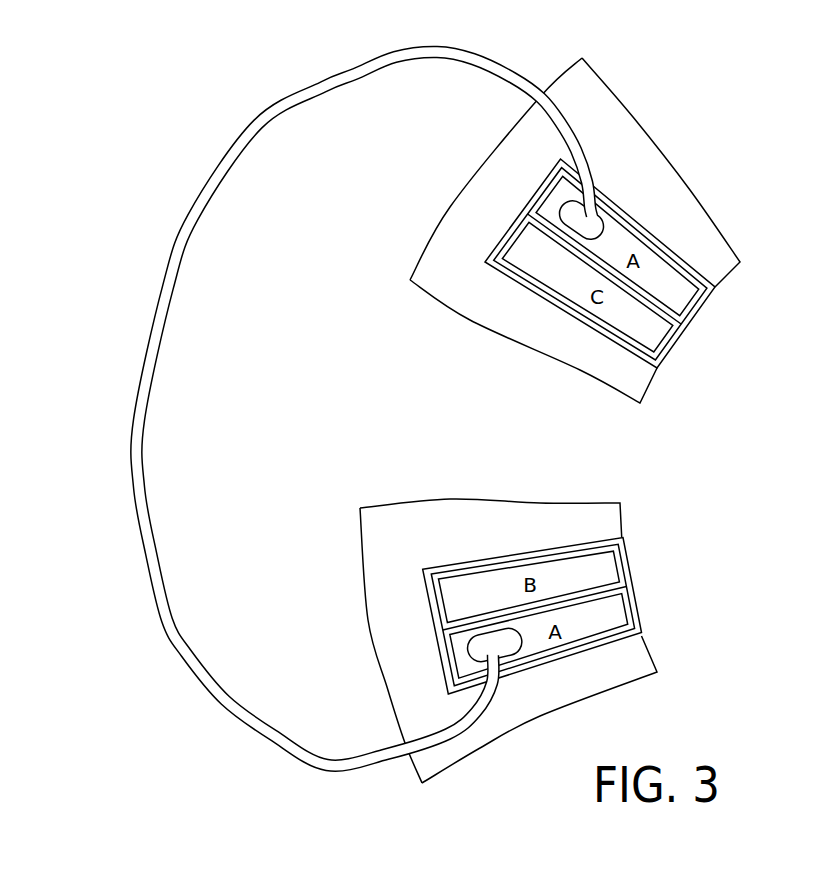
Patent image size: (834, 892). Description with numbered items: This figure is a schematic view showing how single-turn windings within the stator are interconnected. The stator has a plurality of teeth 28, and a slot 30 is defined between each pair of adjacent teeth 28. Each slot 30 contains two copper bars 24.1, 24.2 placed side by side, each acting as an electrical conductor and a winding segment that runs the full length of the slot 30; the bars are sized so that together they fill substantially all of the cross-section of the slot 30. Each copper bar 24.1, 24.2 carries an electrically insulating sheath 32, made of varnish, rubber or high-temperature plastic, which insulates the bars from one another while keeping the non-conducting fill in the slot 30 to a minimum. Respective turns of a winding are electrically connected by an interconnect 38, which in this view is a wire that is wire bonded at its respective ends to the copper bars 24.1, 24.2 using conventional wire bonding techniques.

The copper bar 24.1 is at (653, 338).
The copper bar 24.2 is at (670, 295).
The tooth 28 is at (580, 677).
The slot 30 is at (703, 337).
The electrically insulating sheath 32 is at (623, 557).
The interconnect 38 is at (218, 177).